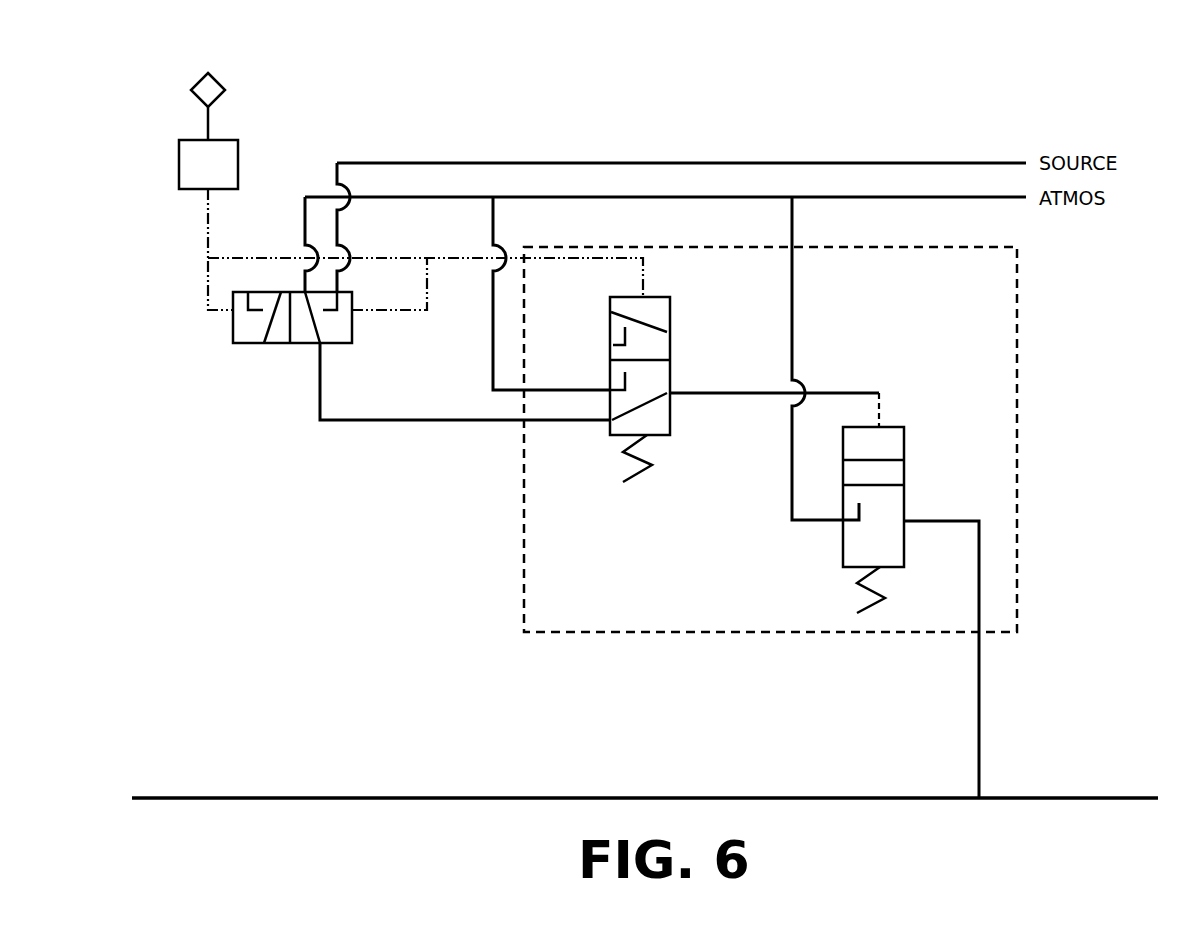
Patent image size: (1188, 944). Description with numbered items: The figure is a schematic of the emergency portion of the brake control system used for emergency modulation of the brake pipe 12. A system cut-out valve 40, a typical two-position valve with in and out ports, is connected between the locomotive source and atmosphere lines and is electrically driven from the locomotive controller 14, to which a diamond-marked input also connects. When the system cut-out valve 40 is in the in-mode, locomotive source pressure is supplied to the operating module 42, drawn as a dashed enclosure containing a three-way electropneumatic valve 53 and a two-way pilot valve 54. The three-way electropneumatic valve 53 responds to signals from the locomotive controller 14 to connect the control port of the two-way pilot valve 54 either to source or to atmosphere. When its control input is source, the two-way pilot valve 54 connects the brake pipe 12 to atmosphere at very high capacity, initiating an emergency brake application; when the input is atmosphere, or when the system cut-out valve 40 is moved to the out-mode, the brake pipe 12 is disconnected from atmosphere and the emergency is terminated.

The brake pipe 12 is at (645, 784).
The locomotive controller 14 is at (208, 131).
The system cut-out valve 40 is at (233, 320).
The operating module 42 is at (1017, 365).
The three-way electropneumatic valve 53 is at (610, 333).
The two-way pilot valve 54 is at (904, 437).